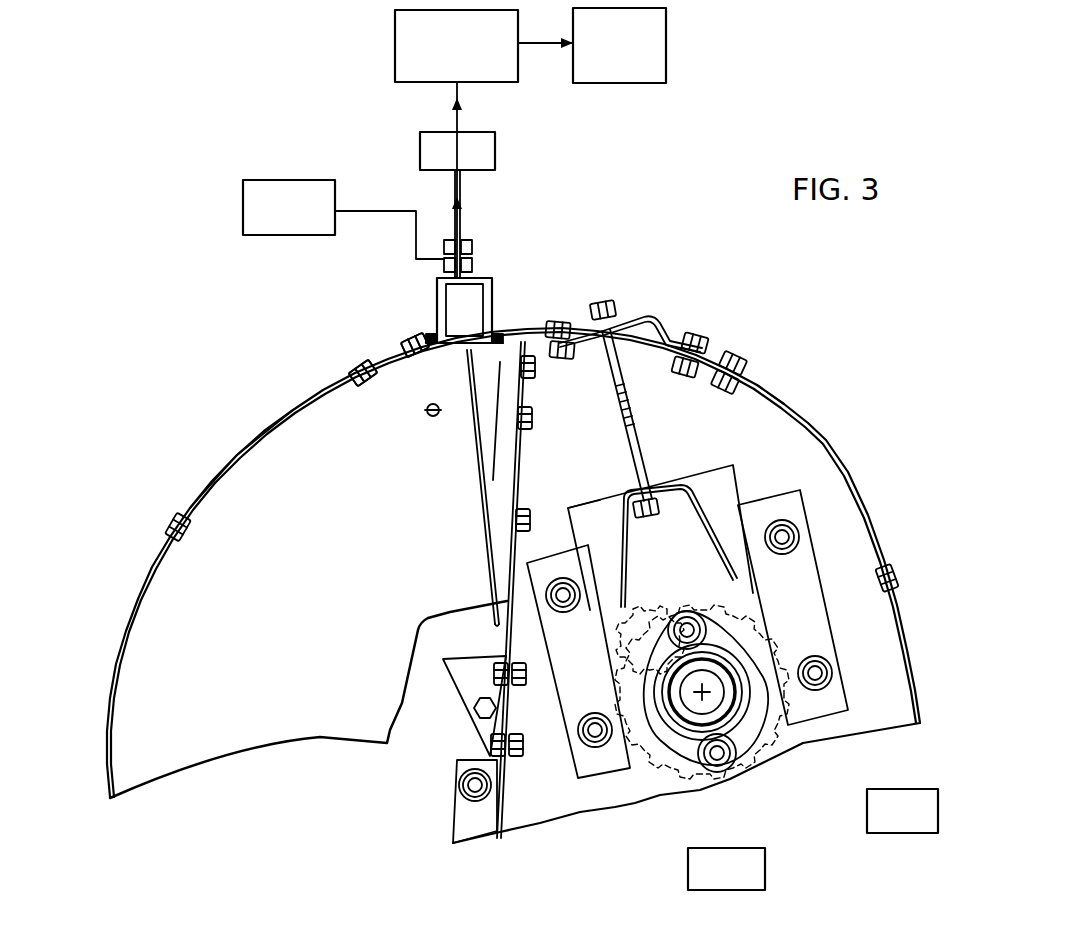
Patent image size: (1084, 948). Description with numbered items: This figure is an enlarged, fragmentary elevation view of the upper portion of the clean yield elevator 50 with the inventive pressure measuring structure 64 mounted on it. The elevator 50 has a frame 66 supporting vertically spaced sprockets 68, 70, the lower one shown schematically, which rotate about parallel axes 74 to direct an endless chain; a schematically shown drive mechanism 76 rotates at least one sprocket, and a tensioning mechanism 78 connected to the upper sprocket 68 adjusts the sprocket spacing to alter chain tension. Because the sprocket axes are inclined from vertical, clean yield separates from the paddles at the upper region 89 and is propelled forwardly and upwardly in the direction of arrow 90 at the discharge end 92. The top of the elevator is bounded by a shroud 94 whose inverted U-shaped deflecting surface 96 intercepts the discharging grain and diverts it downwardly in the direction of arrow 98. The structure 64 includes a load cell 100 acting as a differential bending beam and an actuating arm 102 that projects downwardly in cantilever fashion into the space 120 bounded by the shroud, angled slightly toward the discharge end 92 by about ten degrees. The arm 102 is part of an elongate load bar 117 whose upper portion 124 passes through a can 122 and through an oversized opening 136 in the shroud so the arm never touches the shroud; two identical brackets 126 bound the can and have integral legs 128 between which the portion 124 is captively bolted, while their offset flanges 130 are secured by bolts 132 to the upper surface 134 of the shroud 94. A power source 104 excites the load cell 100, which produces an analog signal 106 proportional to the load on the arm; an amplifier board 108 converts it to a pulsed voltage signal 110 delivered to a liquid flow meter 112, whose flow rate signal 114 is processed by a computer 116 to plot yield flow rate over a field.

The clean yield elevator 50 is at (816, 420).
The inventive structure 64 is at (598, 168).
The frame 66 is at (884, 651).
The sprocket 68 is at (770, 607).
The sprocket 70 is at (727, 780).
The axes 74 is at (702, 692).
The drive mechanism 76 is at (800, 743).
The tensioning mechanism 78 is at (664, 456).
The upper region 89 is at (758, 419).
The arrow 90 is at (570, 416).
The discharge end 92 is at (606, 535).
The shroud 94 is at (272, 422).
The deflecting surface 96 is at (398, 373).
The arrow 98 is at (249, 788).
The load cell 100 is at (484, 278).
The actuating arm 102 is at (478, 460).
The power source 104 is at (312, 223).
The analog signal 106 is at (457, 186).
The amplifier board 108 is at (478, 167).
The pulsed voltage signal 110 is at (455, 120).
The liquid flow meter 112 is at (478, 59).
The flow rate signal 114 is at (540, 43).
The computer 116 is at (640, 59).
The load bar 117 is at (466, 393).
The space 120 is at (605, 389).
The can 122 is at (470, 298).
The load bar portion 124 is at (461, 243).
The brackets 126 is at (433, 338).
The legs 128 is at (450, 240).
The offset flanges 130 is at (428, 346).
The bolts 132 is at (437, 305).
The upper surface 134 is at (233, 456).
The opening 136 is at (432, 370).